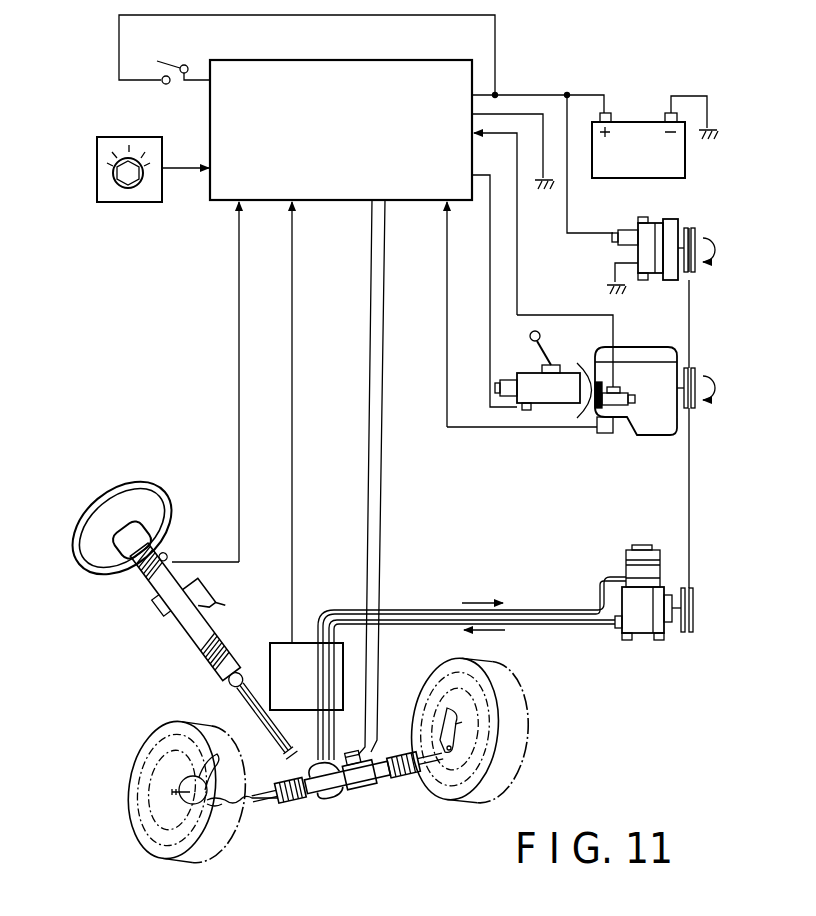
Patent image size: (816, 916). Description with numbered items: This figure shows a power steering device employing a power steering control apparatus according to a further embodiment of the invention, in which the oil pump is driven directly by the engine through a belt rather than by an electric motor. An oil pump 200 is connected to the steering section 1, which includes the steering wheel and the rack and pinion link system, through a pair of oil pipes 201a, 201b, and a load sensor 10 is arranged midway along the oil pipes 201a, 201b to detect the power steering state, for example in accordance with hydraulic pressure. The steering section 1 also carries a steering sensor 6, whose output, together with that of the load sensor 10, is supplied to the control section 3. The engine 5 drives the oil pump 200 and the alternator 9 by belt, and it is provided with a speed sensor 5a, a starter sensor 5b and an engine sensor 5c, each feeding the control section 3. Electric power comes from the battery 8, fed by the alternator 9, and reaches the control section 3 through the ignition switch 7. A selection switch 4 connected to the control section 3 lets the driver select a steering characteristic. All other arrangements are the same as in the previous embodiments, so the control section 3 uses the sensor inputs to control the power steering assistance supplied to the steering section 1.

The steering section 1 is at (322, 792).
The control section 3 is at (405, 60).
The selection switch 4 is at (133, 203).
The engine 5 is at (655, 436).
The speed sensor 5a is at (530, 412).
The starter sensor 5b is at (607, 403).
The engine sensor 5c is at (607, 434).
The steering sensor 6 is at (172, 556).
The ignition switch 7 is at (176, 77).
The battery 8 is at (648, 122).
The alternator 9 is at (655, 222).
The load sensor 10 is at (270, 660).
The oil pump 200 is at (640, 640).
The oil pipe 201a is at (540, 628).
The oil pipe 201b is at (557, 612).